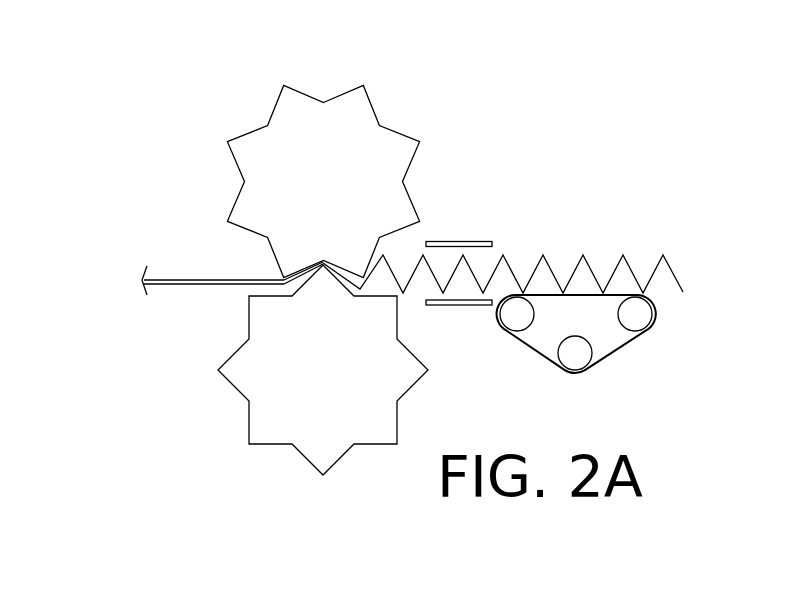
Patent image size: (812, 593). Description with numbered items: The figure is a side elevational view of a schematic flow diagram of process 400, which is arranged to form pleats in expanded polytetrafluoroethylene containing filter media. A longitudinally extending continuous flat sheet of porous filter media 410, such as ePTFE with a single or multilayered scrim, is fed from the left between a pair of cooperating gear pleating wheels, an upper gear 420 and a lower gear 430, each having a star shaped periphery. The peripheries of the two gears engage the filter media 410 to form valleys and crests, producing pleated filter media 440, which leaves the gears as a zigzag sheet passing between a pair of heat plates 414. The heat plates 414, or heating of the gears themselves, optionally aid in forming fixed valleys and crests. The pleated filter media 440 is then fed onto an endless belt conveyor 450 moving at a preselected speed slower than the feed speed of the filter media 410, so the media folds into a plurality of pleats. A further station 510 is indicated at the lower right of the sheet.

The process 400 is at (131, 127).
The porous filter media 410 is at (190, 284).
The heat plates 414 is at (460, 241).
The upper gear pleating wheel 420 is at (265, 141).
The lower gear pleating wheel 430 is at (279, 435).
The pleated filter media 440 is at (586, 258).
The endless belt conveyor 450 is at (627, 335).
The downstream station 510 is at (767, 592).